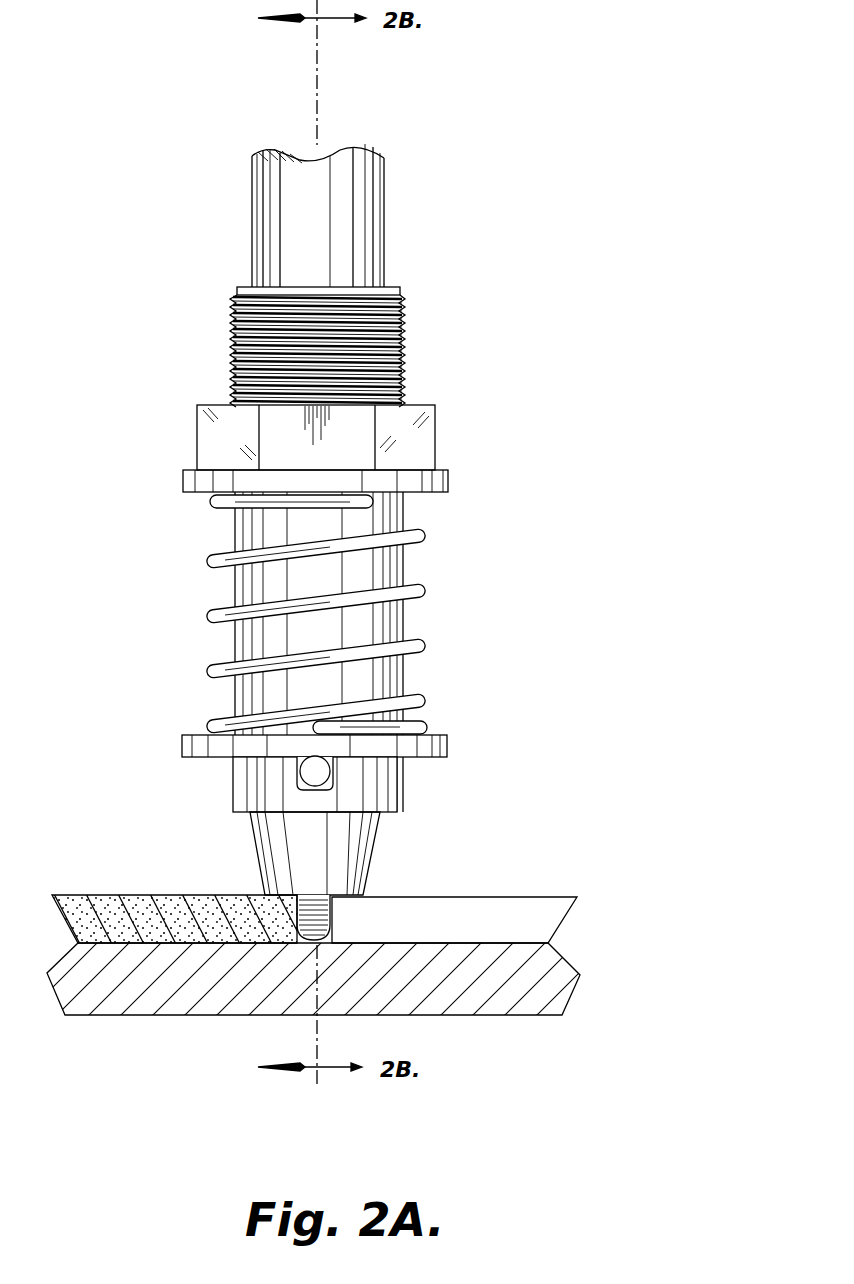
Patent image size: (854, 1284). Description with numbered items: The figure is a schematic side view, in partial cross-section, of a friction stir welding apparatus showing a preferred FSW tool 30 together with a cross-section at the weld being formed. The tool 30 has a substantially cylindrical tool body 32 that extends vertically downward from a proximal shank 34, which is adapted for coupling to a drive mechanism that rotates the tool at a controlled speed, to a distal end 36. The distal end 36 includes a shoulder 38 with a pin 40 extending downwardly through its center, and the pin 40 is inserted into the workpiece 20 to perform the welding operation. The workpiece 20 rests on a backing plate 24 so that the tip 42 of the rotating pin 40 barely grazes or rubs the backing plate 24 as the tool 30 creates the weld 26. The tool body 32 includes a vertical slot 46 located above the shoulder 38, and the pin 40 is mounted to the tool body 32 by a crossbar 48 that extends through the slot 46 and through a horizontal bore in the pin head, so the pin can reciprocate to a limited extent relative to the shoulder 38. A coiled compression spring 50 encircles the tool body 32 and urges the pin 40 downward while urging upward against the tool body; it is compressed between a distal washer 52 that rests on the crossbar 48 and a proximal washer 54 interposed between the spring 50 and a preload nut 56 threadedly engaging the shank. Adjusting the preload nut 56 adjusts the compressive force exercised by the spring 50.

The workpiece 20 is at (308, 884).
The backing plate 24 is at (577, 970).
The weld 26 is at (148, 884).
The FSW tool 30 is at (420, 535).
The tool body 32 is at (385, 260).
The proximal shank 34 is at (368, 268).
The distal end 36 is at (375, 876).
The shoulder 38 is at (263, 886).
The pin 40 is at (364, 901).
The tip 42 is at (345, 936).
The vertical slot 46 is at (297, 760).
The crossbar 48 is at (333, 780).
The coiled compression spring 50 is at (430, 590).
The distal washer 52 is at (448, 745).
The proximal washer 54 is at (448, 487).
The preload nut 56 is at (437, 438).